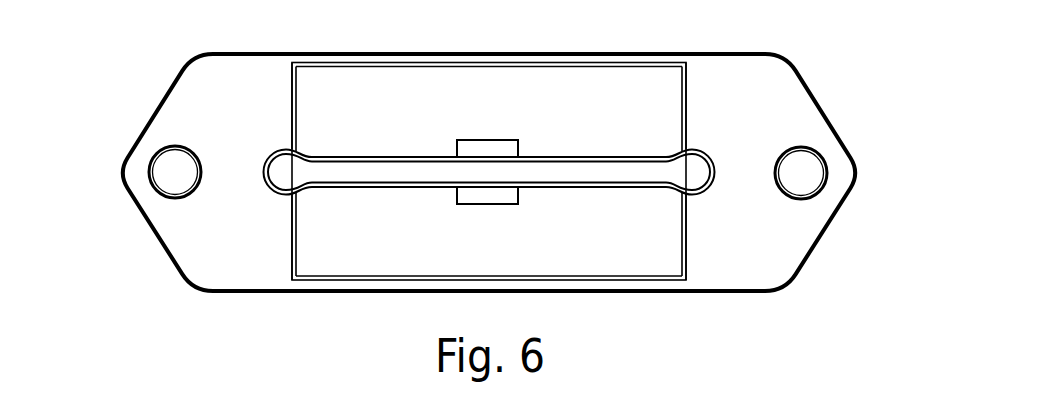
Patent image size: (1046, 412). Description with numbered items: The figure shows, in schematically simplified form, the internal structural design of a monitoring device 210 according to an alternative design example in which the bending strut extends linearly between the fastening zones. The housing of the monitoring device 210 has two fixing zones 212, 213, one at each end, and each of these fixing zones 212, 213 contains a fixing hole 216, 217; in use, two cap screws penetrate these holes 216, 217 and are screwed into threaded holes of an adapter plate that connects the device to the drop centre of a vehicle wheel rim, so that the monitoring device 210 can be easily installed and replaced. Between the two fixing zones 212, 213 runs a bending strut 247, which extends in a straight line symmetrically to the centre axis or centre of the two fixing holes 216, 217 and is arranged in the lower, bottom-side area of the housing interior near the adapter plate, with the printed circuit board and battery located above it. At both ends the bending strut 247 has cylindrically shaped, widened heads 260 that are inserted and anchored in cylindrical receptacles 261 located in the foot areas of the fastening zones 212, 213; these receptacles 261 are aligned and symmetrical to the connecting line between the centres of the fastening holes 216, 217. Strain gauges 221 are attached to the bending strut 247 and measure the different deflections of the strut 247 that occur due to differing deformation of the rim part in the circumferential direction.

The monitoring device 210 is at (841, 87).
The fixing zone 212 is at (129, 243).
The fixing zone 213 is at (849, 240).
The fixing hole 216 is at (176, 173).
The fixing hole 217 is at (801, 177).
The strain gauge 221 is at (481, 150).
The bending strut 247 is at (585, 173).
The widened head 260 is at (280, 167).
The cylindrical receptacle 261 is at (267, 178).